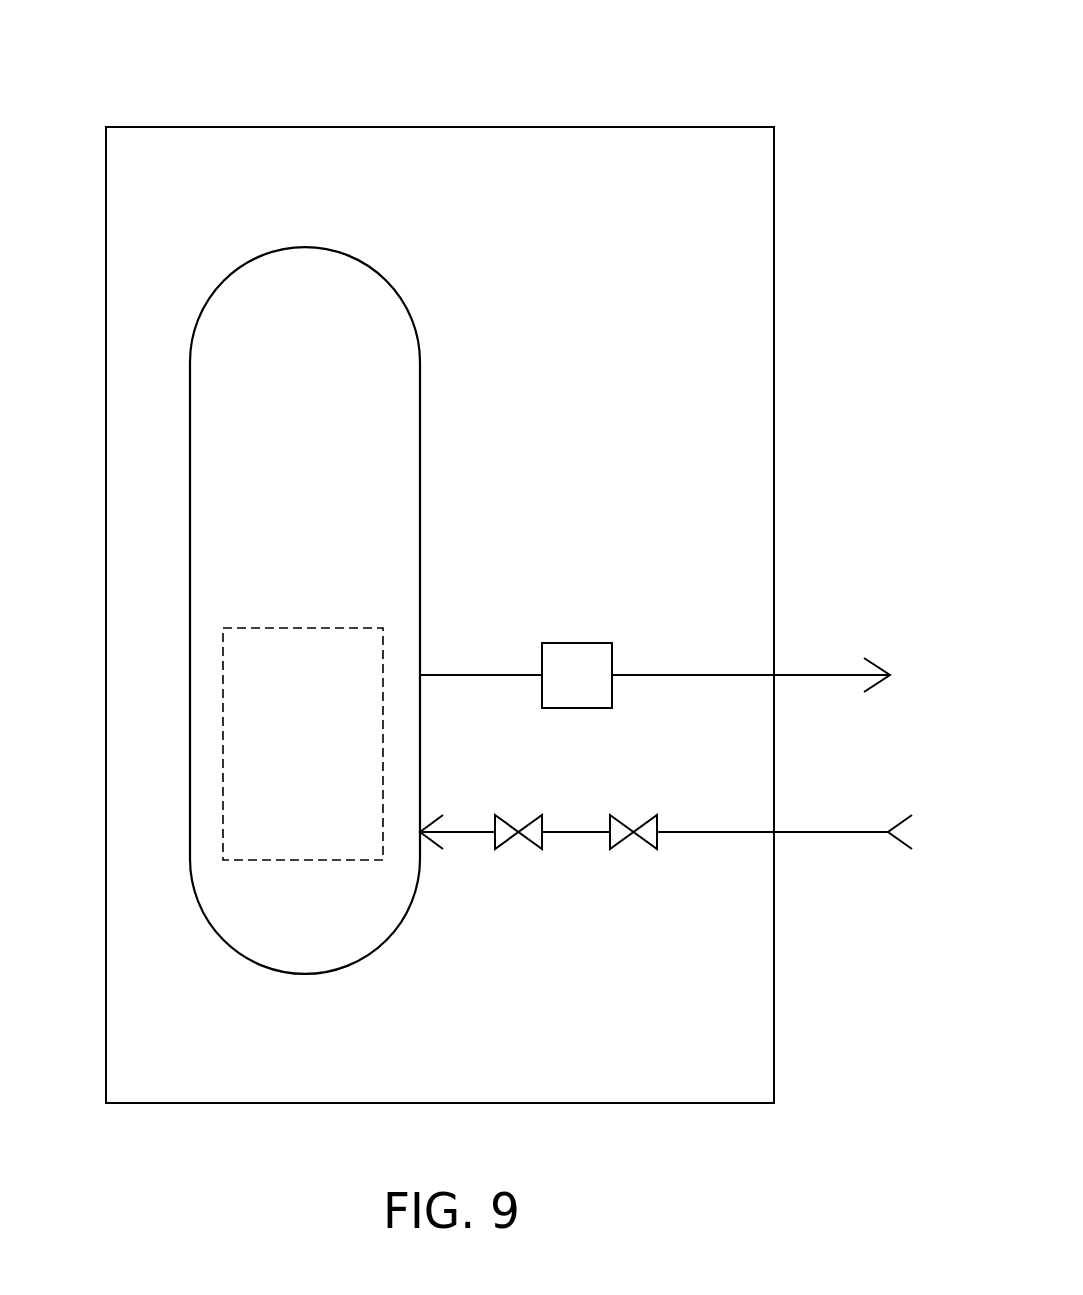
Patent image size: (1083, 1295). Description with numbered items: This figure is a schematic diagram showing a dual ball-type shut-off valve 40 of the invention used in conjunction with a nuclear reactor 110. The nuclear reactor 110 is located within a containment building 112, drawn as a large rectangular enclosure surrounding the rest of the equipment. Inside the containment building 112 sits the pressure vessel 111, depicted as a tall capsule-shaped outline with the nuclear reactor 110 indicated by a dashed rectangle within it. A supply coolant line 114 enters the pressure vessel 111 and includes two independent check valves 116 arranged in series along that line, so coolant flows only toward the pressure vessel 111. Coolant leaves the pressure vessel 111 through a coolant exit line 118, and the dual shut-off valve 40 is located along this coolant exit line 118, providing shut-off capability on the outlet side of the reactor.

The dual shut-off valve 40 is at (576, 643).
The nuclear reactor 110 is at (222, 760).
The pressure vessel 111 is at (420, 367).
The containment building 112 is at (697, 127).
The supply coolant line 114 is at (817, 832).
The check valves 116 is at (633, 850).
The coolant exit line 118 is at (808, 675).